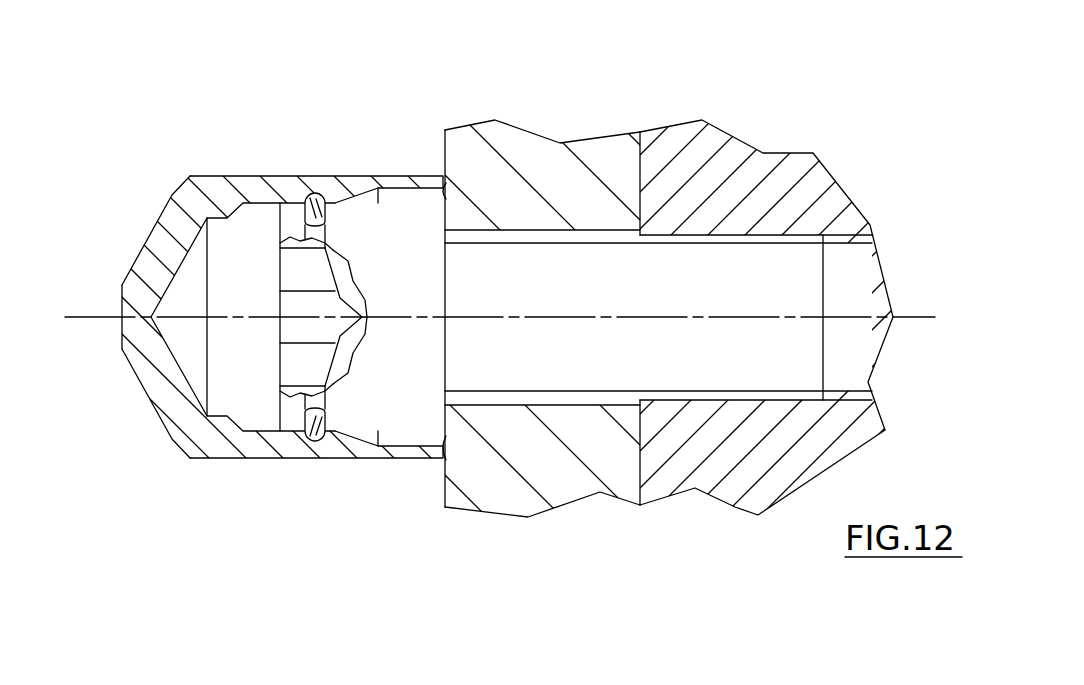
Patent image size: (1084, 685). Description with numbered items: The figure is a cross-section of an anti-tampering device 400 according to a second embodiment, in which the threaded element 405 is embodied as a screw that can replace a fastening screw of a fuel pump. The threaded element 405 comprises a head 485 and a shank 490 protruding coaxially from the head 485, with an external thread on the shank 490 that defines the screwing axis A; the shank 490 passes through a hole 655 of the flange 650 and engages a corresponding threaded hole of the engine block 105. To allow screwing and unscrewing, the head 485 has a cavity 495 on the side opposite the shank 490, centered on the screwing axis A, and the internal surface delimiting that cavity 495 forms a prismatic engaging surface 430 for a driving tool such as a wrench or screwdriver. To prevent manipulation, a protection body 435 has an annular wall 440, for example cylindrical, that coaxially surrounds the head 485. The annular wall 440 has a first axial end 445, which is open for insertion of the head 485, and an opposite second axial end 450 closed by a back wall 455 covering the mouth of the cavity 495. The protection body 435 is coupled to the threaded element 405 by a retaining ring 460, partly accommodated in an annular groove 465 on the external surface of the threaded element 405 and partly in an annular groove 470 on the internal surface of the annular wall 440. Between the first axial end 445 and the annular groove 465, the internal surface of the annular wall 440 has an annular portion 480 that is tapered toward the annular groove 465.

The screwing axis A is at (112, 312).
The engine block 105 is at (802, 195).
The anti-tampering device 400 is at (367, 347).
The threaded element 405 is at (705, 365).
The engaging surface 430 is at (295, 248).
The protection body 435 is at (183, 230).
The annular wall 440 is at (383, 180).
The first axial end 445 is at (447, 458).
The second axial end 450 is at (128, 243).
The back wall 455 is at (150, 387).
The retaining ring 460 is at (312, 445).
The annular groove 465 is at (305, 420).
The annular groove 470 is at (322, 440).
The annular portion 480 is at (355, 188).
The head 485 is at (690, 238).
The shank 490 is at (797, 292).
The cavity 495 is at (303, 326).
The flange 650 is at (608, 152).
The hole 655 is at (592, 228).